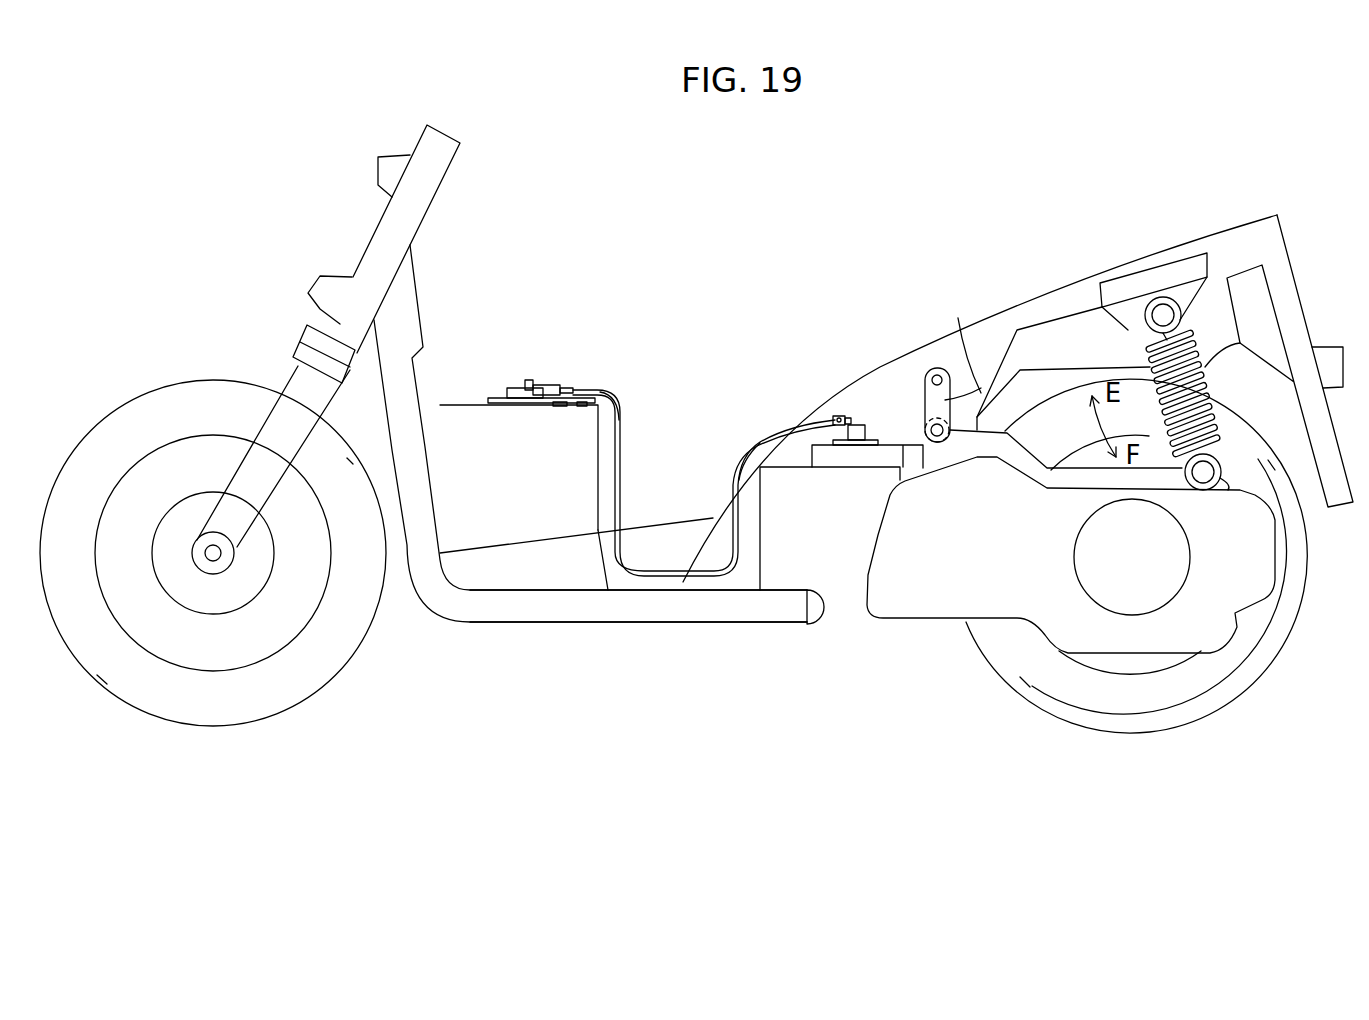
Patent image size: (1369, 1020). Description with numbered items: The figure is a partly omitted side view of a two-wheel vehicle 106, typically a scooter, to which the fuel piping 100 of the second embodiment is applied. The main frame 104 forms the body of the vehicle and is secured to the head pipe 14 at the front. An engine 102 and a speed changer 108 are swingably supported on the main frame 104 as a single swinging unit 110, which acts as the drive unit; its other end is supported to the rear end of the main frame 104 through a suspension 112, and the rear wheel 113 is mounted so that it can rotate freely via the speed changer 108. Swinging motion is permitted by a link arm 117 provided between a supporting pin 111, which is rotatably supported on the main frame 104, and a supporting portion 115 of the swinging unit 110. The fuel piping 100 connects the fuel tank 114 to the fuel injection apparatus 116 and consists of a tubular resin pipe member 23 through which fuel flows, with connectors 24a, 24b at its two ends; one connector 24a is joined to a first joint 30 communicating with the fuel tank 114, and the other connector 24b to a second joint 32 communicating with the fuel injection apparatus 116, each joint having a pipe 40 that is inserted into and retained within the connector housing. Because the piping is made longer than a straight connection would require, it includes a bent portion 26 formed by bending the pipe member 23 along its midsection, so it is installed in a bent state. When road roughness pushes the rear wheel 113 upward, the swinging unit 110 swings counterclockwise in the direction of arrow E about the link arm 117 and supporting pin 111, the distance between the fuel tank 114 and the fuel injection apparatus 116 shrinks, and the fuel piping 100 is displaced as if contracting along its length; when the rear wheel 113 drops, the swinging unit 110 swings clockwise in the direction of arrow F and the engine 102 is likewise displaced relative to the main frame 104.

The head pipe 14 is at (384, 230).
The pipe member 23 is at (621, 411).
The connector 24a is at (838, 417).
The connector 24b is at (550, 383).
The bent portion 26 is at (757, 433).
The first joint 30 is at (850, 446).
The second joint 32 is at (512, 405).
The pipe 40 is at (518, 383).
The fuel piping 100 is at (633, 460).
The engine 102 is at (847, 583).
The main frame 104 is at (570, 612).
The two-wheel vehicle 106 is at (785, 171).
The speed changer 108 is at (1053, 623).
The swinging unit 110 is at (925, 632).
The supporting pin 111 is at (933, 378).
The suspension 112 is at (1212, 350).
The rear wheel 113 is at (1223, 683).
The fuel tank 114 is at (474, 418).
The supporting portion 115 is at (945, 445).
The fuel injection apparatus 116 is at (889, 443).
The link arm 117 is at (972, 334).